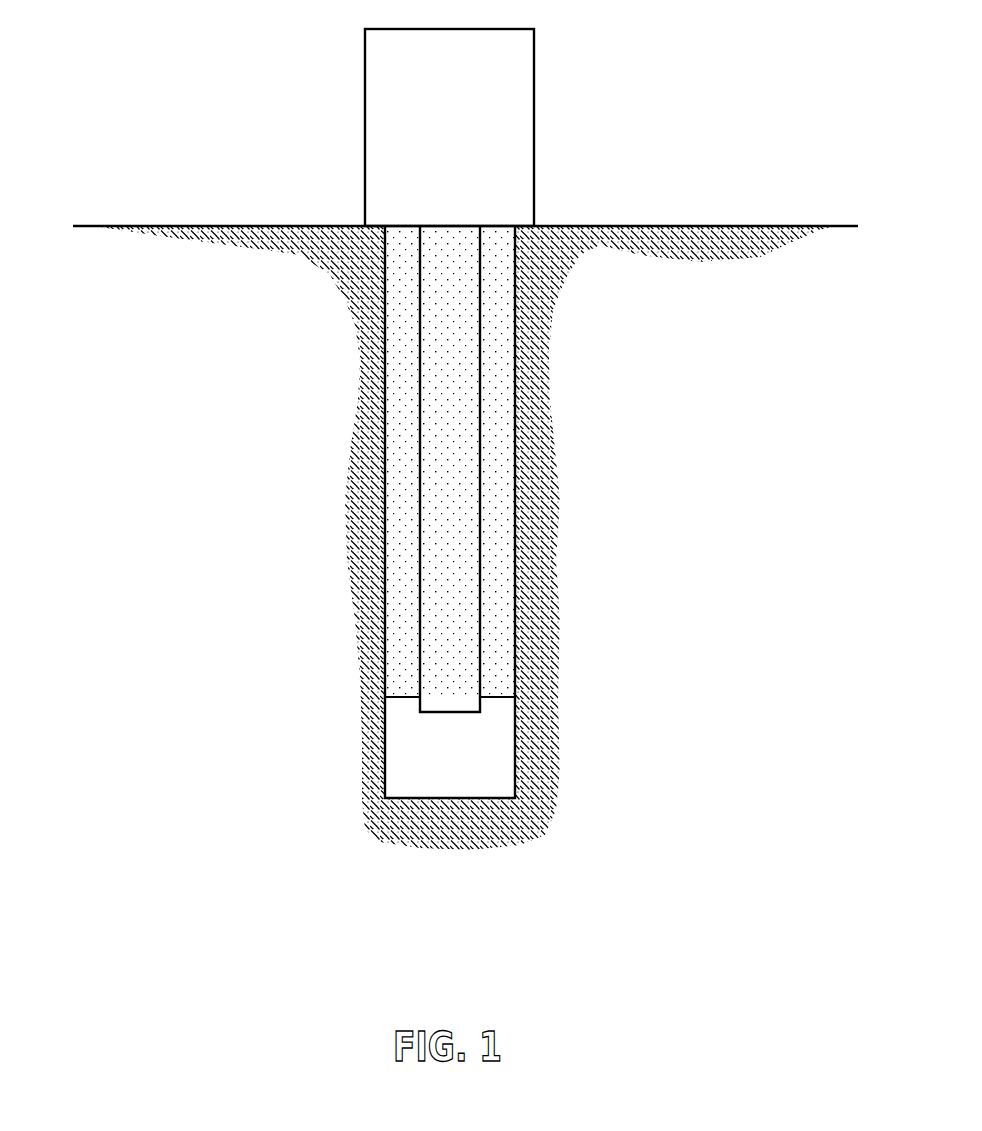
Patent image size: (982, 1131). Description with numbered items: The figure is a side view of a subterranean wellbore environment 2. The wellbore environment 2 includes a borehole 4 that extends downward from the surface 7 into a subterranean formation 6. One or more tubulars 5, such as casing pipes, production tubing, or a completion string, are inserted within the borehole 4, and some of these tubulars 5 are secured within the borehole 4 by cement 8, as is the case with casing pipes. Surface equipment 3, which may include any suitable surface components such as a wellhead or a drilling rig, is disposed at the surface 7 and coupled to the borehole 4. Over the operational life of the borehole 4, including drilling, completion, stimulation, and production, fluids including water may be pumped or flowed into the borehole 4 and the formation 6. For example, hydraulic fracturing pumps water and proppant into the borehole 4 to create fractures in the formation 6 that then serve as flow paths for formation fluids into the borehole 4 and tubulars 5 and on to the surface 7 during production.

The subterranean wellbore environment 2 is at (126, 100).
The surface equipment 3 is at (534, 50).
The borehole 4 is at (513, 392).
The tubulars 5 is at (476, 489).
The subterranean formation 6 is at (545, 617).
The surface 7 is at (628, 226).
The cement 8 is at (400, 518).